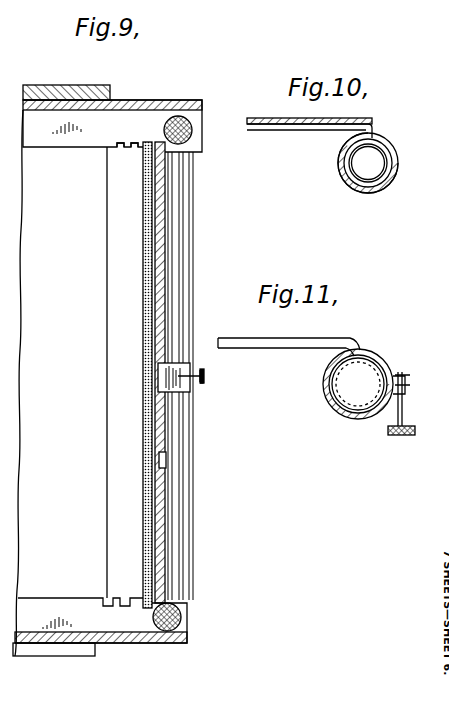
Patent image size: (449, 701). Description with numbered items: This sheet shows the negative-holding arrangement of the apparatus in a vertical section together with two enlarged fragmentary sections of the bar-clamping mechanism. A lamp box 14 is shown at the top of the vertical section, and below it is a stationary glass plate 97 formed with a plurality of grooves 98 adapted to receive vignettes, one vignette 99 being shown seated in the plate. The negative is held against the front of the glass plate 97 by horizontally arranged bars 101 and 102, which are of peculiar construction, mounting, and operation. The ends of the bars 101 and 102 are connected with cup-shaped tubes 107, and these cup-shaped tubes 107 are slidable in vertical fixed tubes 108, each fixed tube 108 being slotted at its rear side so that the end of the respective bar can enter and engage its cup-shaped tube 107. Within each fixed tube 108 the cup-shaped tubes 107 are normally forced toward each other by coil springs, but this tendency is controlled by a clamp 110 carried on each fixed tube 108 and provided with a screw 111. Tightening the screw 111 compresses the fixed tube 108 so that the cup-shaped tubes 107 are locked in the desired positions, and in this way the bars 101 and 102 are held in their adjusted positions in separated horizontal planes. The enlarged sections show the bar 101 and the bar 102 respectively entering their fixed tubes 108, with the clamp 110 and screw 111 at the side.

In FIG. 9, the lamp box 14 is at (56, 85).
In FIG. 9, the stationary glass plate 97 is at (155, 347).
In FIG. 9, the grooves 98 is at (133, 150).
In FIG. 9, the vignette 99 is at (145, 217).
In FIG. 9, the bar 101 is at (160, 289).
In FIG. 10, the bar 101 is at (278, 127).
In FIG. 9, the bar 102 is at (157, 461).
In FIG. 11, the bar 102 is at (265, 345).
In FIG. 10, the cup-shaped tube 107 is at (368, 181).
In FIG. 11, the cup-shaped tube 107 is at (355, 398).
In FIG. 9, the fixed tube 108 is at (183, 303).
In FIG. 10, the fixed tube 108 is at (346, 179).
In FIG. 11, the fixed tube 108 is at (328, 379).
In FIG. 9, the clamp 110 is at (189, 390).
In FIG. 11, the clamp 110 is at (326, 396).
In FIG. 9, the screw 111 is at (204, 380).
In FIG. 11, the screw 111 is at (399, 435).